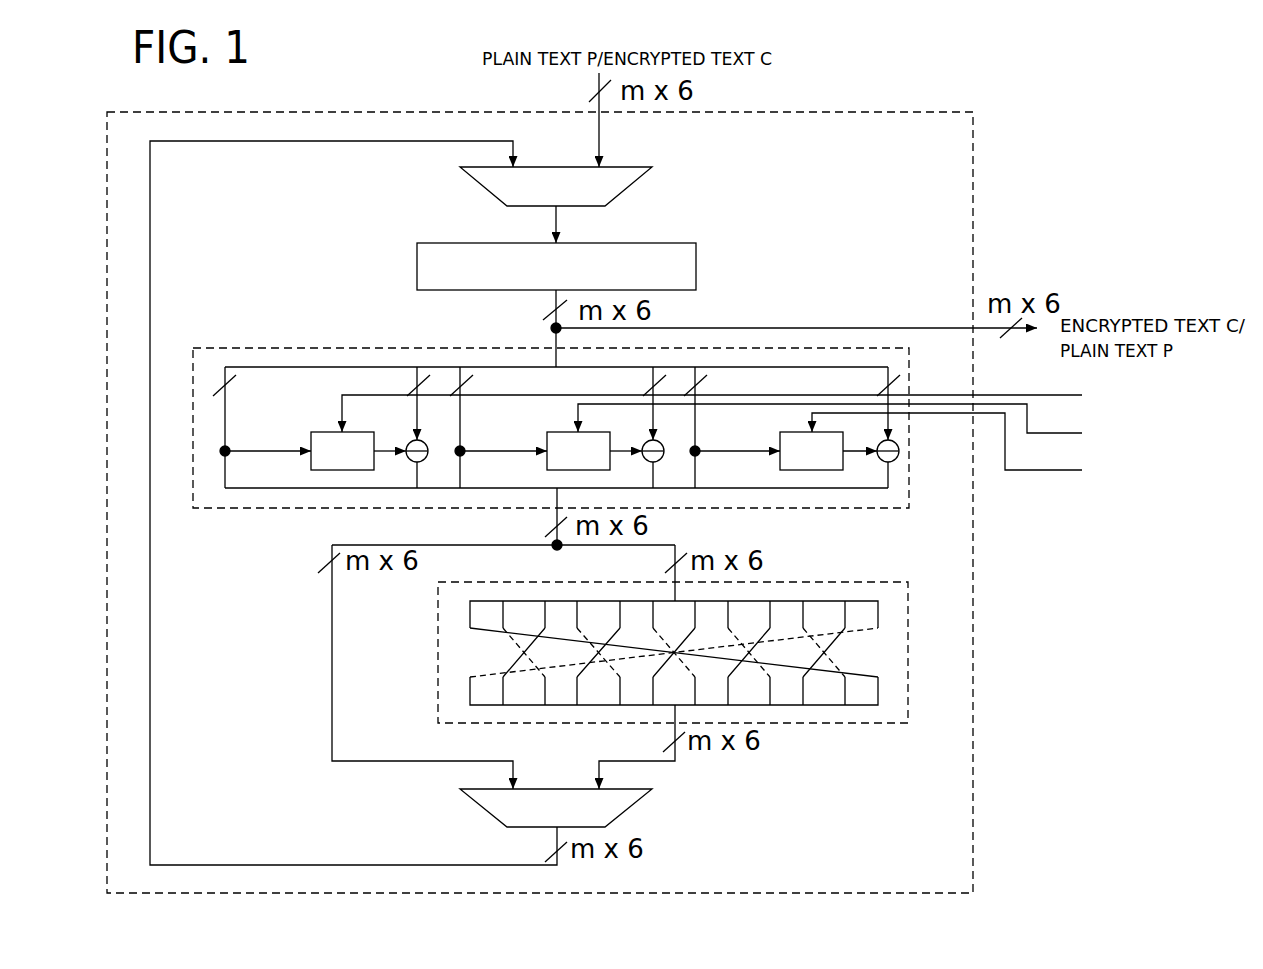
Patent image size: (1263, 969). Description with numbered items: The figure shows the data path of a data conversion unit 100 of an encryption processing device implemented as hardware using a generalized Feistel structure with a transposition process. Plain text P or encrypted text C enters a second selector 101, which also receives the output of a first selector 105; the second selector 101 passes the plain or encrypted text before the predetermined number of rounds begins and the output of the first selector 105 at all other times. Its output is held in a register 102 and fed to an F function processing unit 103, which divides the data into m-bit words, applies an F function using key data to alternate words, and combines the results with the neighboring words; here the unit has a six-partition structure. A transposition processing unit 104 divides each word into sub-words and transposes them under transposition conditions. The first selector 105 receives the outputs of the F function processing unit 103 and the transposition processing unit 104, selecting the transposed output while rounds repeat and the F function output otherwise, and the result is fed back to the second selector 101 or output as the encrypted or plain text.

The data conversion unit 100 is at (973, 227).
The second selector 101 is at (626, 190).
The register 102 is at (697, 262).
The F function processing unit 103 is at (288, 348).
The transposition processing unit 104 is at (858, 723).
The first selector 105 is at (626, 810).